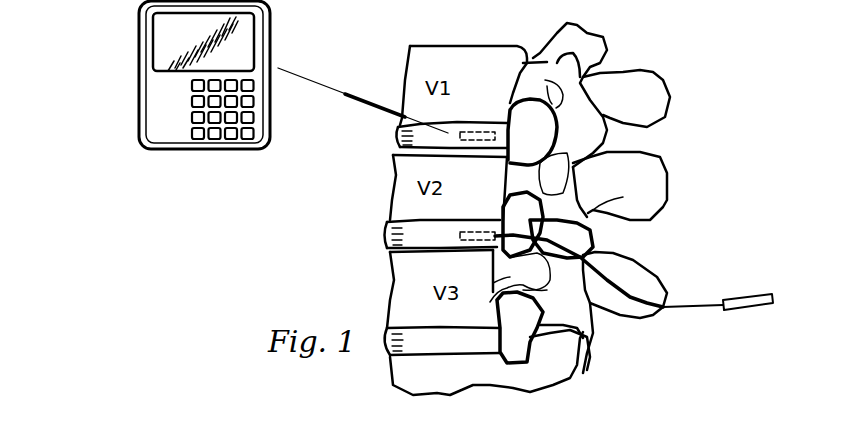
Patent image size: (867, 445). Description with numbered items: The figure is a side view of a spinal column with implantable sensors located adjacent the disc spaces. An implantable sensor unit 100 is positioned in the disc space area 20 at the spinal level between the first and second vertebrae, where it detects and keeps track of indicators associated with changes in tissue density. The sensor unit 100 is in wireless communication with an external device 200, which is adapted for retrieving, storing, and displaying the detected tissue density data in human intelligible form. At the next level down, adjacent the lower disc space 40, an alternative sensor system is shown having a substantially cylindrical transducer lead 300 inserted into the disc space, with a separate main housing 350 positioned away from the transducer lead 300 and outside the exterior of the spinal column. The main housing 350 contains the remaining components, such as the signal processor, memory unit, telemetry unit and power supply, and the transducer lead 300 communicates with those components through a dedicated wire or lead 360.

The external device 200 is at (139, 60).
The disc space area 20 is at (395, 136).
The second intervertebral disc 40 is at (387, 239).
The implantable sensor unit 100 is at (480, 128).
The transducer lead 300 is at (473, 230).
The main housing 350 is at (753, 309).
The wire or lead 360 is at (687, 311).